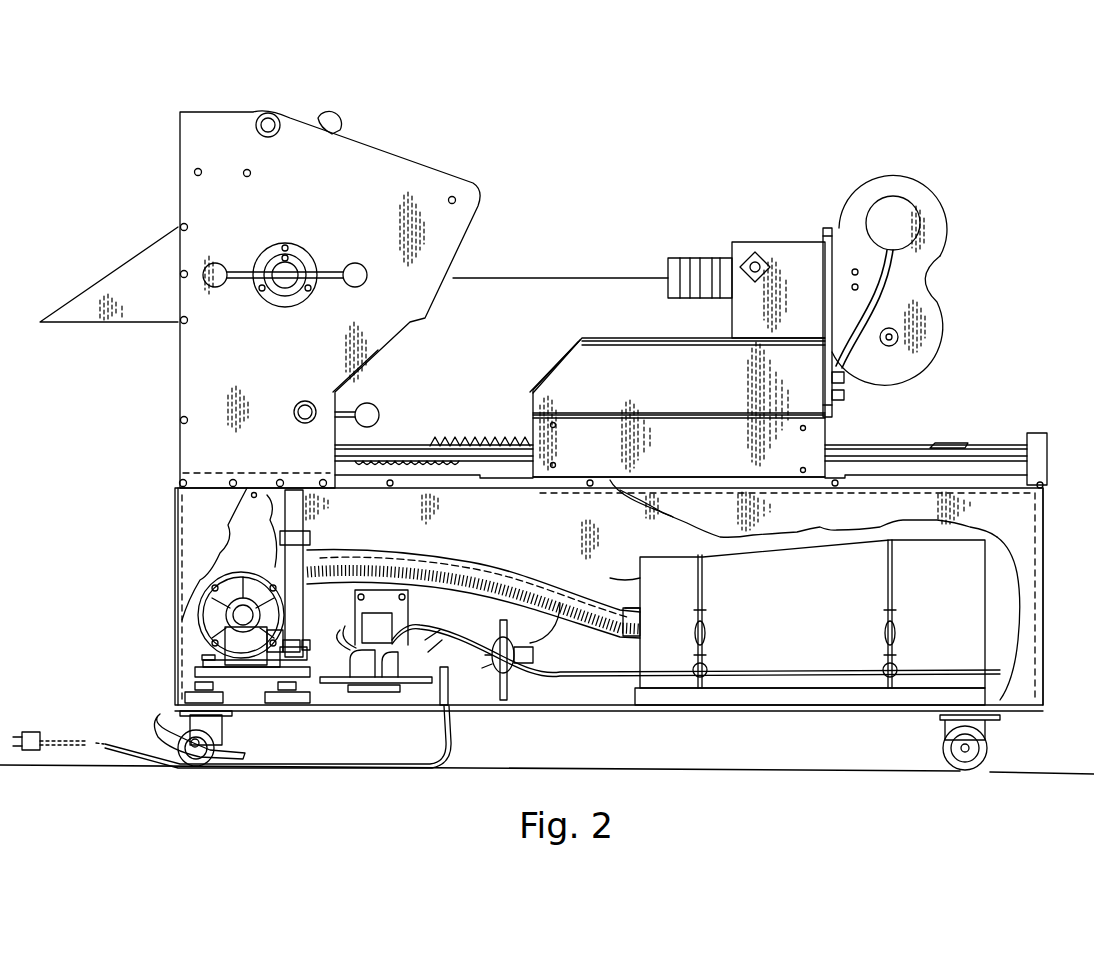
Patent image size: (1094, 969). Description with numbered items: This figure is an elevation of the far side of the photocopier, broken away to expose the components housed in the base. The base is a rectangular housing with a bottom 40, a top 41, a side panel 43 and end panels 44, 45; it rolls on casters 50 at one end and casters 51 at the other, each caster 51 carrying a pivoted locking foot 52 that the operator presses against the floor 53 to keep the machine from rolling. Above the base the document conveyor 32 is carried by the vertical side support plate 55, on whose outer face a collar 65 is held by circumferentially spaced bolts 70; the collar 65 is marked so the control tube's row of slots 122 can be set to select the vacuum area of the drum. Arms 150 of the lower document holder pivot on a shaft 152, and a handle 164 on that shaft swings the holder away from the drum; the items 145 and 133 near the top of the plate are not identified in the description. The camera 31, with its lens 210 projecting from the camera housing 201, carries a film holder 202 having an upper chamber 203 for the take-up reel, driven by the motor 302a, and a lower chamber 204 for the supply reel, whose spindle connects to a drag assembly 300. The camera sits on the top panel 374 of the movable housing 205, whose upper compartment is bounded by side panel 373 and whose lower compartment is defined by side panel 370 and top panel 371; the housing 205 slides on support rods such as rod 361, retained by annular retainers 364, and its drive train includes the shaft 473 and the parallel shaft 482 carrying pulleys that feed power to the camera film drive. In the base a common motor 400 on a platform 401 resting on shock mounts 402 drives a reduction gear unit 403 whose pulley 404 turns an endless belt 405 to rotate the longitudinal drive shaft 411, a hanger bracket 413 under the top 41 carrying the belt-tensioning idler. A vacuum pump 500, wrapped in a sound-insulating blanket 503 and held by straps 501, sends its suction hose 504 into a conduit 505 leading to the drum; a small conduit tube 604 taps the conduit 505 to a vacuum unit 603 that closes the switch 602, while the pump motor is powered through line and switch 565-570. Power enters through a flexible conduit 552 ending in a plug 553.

The document conveyor 32 is at (158, 163).
The roller 145 is at (314, 122).
The guide roller 133 is at (272, 130).
The side support plate 55 is at (366, 152).
The collar 65 is at (276, 246).
The second row of aligned slots 122 is at (292, 268).
The bolts 70 is at (262, 292).
The arm 150 is at (372, 360).
The shaft 152 is at (312, 392).
The handle 164 is at (343, 410).
The longitudinal drive shaft 411 is at (448, 440).
The hanger bracket 413 is at (252, 494).
The endless belt 405 is at (304, 503).
The conduit 505 is at (278, 540).
The motor 400 is at (258, 564).
The reduction gear unit 403 is at (236, 630).
The pulley 404 is at (305, 640).
The platform 401 is at (192, 672).
The shock mounts 402 is at (190, 692).
The end panel 45 is at (176, 516).
The top 41 is at (470, 488).
The small conduit tube 604 is at (378, 552).
The vacuum unit 603 is at (496, 640).
The vacuum switch 602 is at (480, 660).
The suction hose 504 is at (578, 626).
The line and switch 565-570 is at (545, 672).
The plug 553 is at (38, 716).
The flexible conduit 552 is at (70, 738).
The pivoted locking foot 52 is at (158, 720).
The casters 51 is at (230, 737).
The bottom 40 is at (546, 712).
The film holder 202 is at (826, 218).
The casters 50 is at (1000, 741).
The floor 53 is at (547, 757).
The housing 205 is at (604, 327).
The top panel 374 is at (682, 330).
The side panel 373 is at (542, 390).
The top panel 371 is at (572, 418).
The side panel 370 is at (564, 480).
The lens 210 is at (690, 262).
The camera housing 201 is at (752, 248).
The camera 31 is at (794, 233).
The film take-up reel motor 302a is at (878, 205).
The upper cylindrical chamber 203 is at (946, 212).
The lower cylindrical chamber 204 is at (948, 348).
The drag assembly 300 is at (886, 346).
The shaft 473 is at (846, 398).
The shaft 482 is at (846, 402).
The support rod 361 is at (905, 448).
The annular retainers 364 is at (1040, 434).
The side panel 43 is at (1026, 516).
The end panel 44 is at (1043, 592).
The vacuum pump 500 is at (666, 548).
The blanket 503 is at (636, 576).
The straps 501 is at (704, 580).